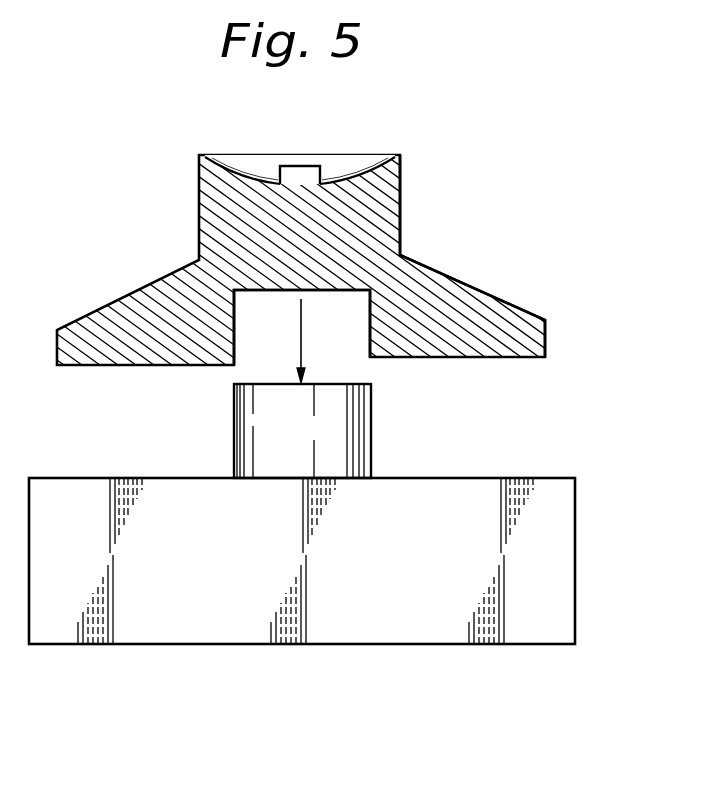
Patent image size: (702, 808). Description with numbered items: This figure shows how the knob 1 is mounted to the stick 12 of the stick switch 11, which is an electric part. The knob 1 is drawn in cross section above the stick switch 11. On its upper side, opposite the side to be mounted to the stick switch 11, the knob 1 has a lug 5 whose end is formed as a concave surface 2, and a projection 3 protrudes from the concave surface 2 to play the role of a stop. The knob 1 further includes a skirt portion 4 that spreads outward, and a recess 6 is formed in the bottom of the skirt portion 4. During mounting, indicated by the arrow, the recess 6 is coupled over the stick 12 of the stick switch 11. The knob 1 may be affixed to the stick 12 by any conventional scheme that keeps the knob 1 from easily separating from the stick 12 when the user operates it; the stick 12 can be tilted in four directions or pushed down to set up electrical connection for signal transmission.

The knob 1 is at (155, 280).
The concave surface 2 is at (353, 175).
The projection 3 is at (292, 157).
The skirt portion 4 is at (490, 292).
The lug 5 is at (400, 180).
The recess 6 is at (275, 323).
The stick switch 11 is at (135, 645).
The stick 12 is at (371, 425).